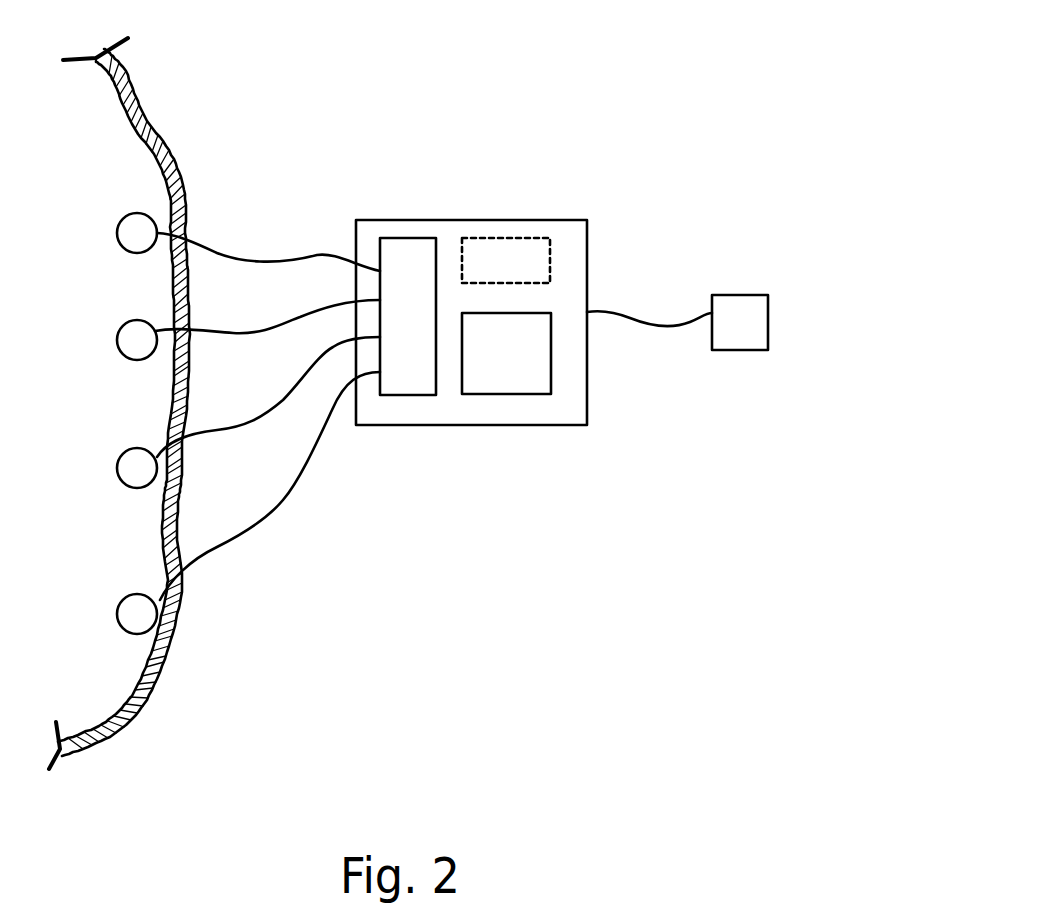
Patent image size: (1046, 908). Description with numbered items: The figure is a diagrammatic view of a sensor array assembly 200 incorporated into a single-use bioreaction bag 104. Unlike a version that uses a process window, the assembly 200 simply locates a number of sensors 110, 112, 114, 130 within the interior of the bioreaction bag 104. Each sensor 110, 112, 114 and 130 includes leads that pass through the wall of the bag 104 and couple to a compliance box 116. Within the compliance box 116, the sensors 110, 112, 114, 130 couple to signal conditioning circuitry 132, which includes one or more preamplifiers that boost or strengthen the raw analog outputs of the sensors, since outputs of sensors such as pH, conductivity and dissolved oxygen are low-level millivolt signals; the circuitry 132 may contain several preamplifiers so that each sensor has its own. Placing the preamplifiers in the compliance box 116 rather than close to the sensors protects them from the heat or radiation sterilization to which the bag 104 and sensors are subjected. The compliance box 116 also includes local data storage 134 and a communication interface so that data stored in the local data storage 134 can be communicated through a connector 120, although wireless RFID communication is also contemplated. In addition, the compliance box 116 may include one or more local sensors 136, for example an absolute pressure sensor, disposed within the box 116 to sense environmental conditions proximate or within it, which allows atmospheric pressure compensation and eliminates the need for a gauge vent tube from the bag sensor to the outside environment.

The bioreaction bag 104 is at (143, 718).
The sensor 110 is at (117, 233).
The sensor 112 is at (117, 341).
The sensor 114 is at (117, 468).
The sensor 130 is at (117, 614).
The compliance box 116 is at (513, 220).
The connector 120 is at (736, 295).
The signal conditioning circuitry 132 is at (405, 395).
The local data storage 134 is at (512, 395).
The local sensor 136 is at (477, 238).
The assembly 200 is at (604, 82).